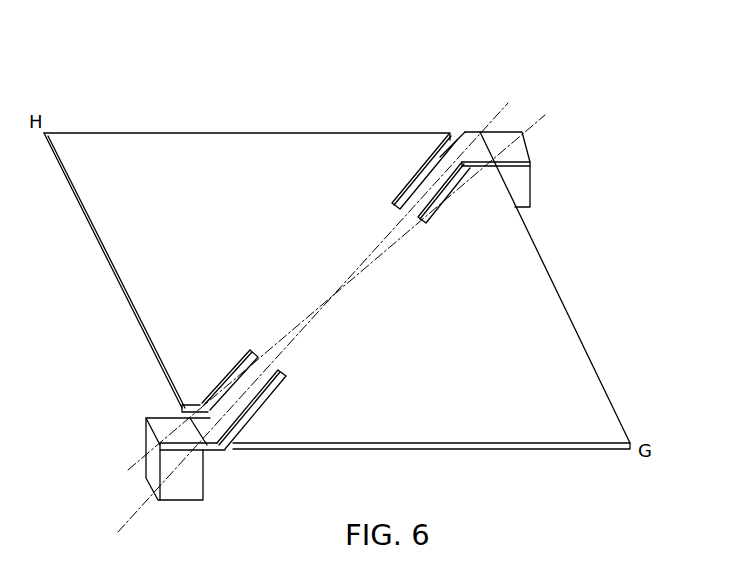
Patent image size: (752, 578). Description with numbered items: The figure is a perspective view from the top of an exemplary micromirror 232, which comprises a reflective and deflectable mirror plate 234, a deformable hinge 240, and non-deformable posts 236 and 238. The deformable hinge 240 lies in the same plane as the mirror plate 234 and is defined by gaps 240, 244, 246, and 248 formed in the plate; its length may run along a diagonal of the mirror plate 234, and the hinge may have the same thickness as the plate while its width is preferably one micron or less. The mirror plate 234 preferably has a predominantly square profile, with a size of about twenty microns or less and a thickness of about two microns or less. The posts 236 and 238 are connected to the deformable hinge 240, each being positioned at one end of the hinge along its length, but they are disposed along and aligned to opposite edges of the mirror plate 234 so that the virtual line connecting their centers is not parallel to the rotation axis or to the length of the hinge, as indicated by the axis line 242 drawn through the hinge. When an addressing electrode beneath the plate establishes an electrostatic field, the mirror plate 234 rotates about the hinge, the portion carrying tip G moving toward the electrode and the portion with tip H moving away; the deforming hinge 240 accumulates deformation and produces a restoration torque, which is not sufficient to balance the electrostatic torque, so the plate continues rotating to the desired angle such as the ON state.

The micromirror 232 is at (298, 89).
The mirror plate 234 is at (533, 292).
The post 236 is at (523, 183).
The post 238 is at (198, 470).
The deformable hinge 240 is at (277, 382).
The pivot axis 242 is at (242, 400).
The gap 244 is at (235, 367).
The gap 246 is at (415, 175).
The gap 248 is at (450, 198).